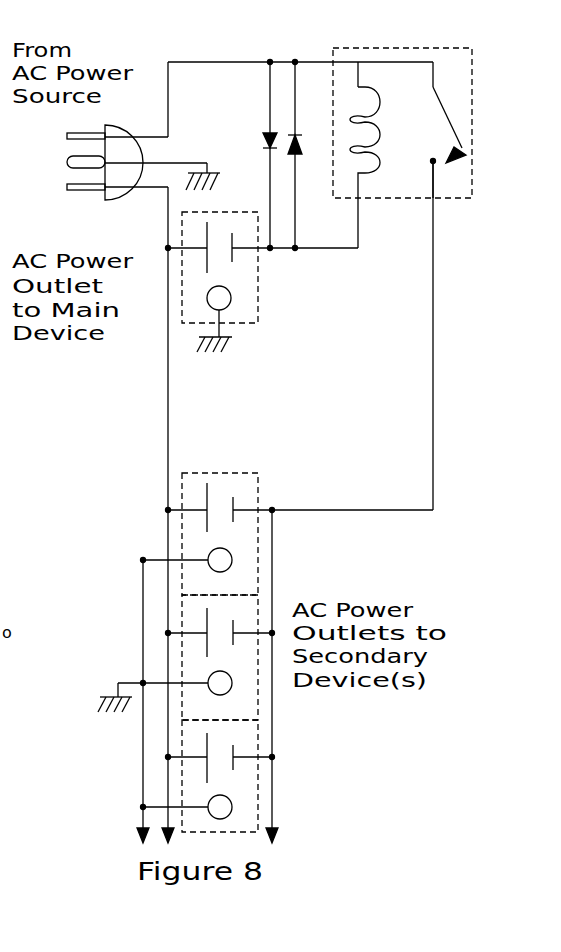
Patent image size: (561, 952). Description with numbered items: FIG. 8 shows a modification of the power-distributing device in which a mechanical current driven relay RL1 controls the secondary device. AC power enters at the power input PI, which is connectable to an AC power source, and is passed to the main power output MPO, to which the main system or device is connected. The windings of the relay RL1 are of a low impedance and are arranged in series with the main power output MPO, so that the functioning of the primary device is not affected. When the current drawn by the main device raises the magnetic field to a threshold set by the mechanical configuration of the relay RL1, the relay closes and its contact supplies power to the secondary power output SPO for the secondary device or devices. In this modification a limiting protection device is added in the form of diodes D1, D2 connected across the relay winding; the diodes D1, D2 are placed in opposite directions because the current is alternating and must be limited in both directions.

The power input PI is at (95, 162).
The diode D1 is at (258, 155).
The diode D2 is at (309, 155).
The mechanical current driven relay RL1 is at (399, 105).
The main power output MPO is at (247, 282).
The secondary power output SPO is at (258, 652).